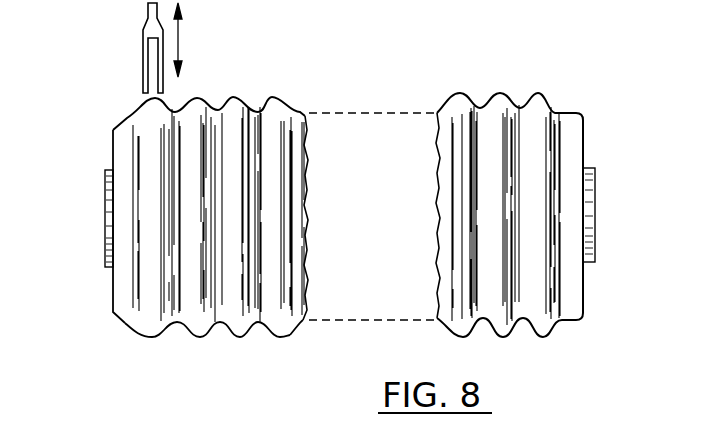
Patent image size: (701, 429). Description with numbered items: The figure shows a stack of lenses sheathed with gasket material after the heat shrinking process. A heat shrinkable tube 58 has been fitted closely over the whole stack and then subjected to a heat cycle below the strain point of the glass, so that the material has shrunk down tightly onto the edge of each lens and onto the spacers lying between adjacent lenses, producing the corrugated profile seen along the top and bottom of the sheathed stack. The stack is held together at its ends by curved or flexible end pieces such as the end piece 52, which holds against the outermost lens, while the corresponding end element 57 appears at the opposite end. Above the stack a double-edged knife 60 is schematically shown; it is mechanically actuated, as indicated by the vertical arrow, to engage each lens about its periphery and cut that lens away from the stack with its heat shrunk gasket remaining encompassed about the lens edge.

The end piece 52 is at (596, 194).
The end tab 57 is at (105, 198).
The heat shrinkable tube 58 is at (122, 320).
The double-edged knife 60 is at (143, 60).